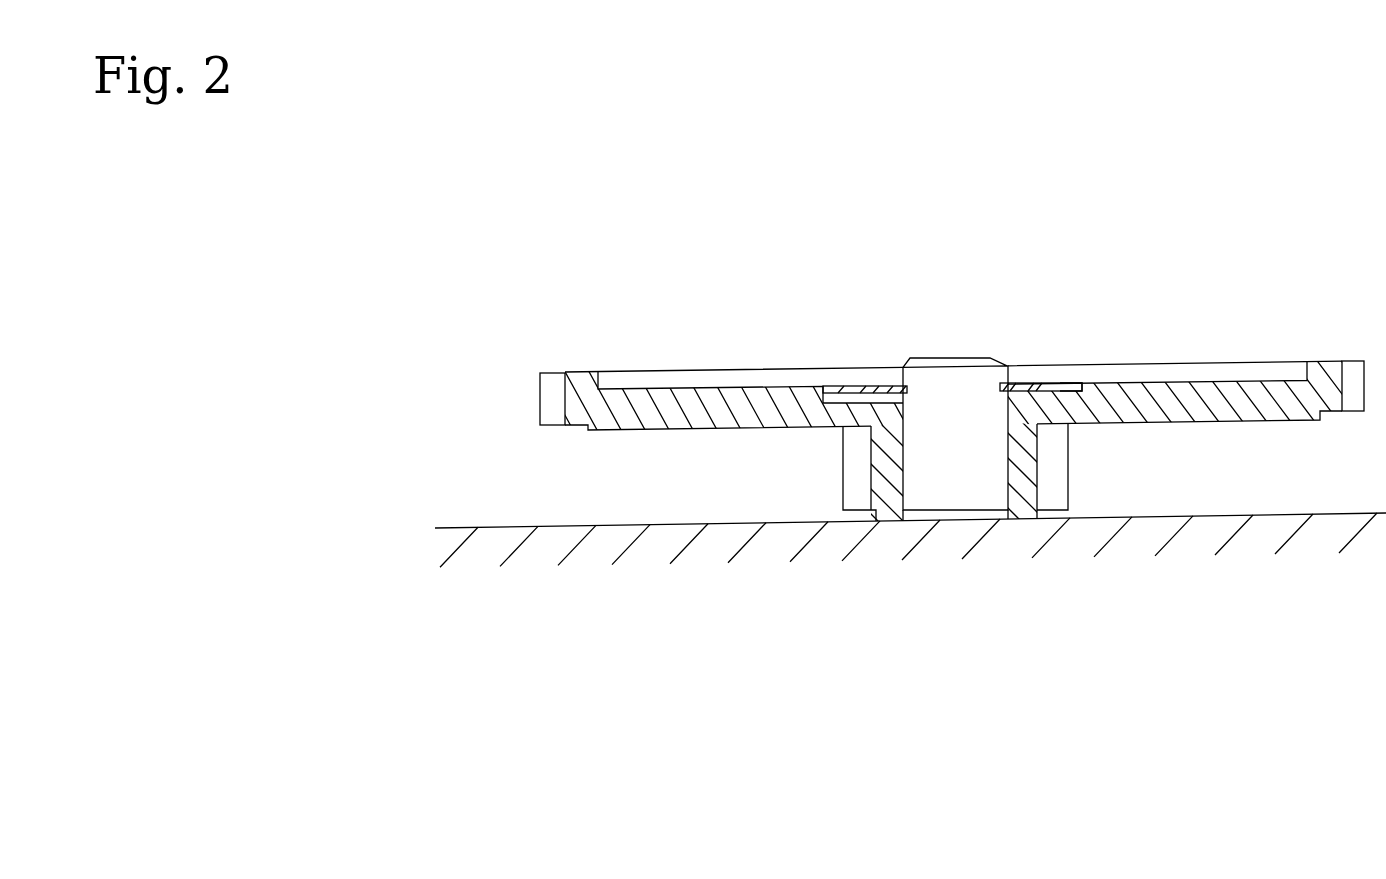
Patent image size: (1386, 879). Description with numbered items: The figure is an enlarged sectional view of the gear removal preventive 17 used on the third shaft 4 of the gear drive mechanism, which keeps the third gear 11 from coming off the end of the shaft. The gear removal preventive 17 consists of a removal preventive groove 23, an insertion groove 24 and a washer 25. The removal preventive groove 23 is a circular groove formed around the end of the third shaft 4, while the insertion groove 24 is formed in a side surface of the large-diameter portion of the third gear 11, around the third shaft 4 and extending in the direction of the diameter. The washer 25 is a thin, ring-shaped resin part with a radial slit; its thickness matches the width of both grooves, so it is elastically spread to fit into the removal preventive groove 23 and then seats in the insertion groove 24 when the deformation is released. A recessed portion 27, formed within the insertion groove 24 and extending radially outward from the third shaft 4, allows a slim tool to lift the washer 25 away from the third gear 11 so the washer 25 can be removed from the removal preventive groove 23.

The third gear 11 is at (1328, 358).
The third shaft 4 is at (960, 486).
The recessed portion 27 is at (845, 387).
The gear removal preventive 17 is at (1175, 262).
The removal preventive groove 23 is at (1006, 384).
The washer 25 is at (1032, 385).
The insertion groove 24 is at (1075, 385).